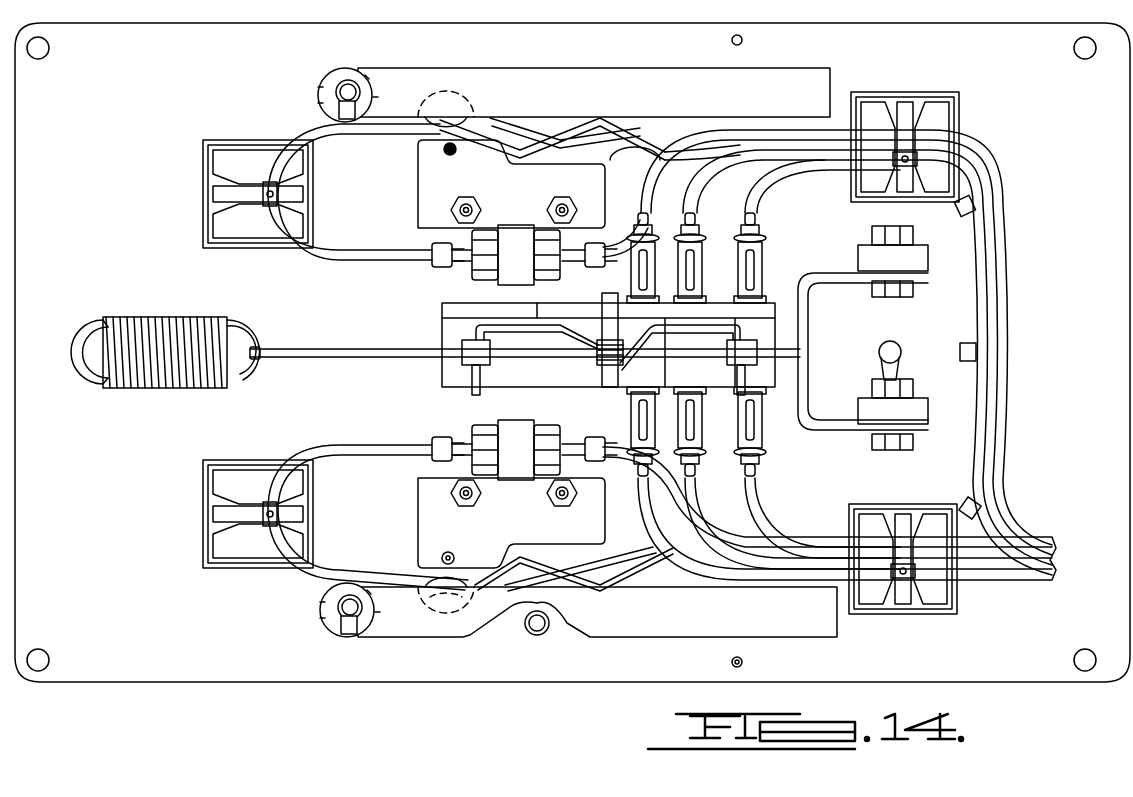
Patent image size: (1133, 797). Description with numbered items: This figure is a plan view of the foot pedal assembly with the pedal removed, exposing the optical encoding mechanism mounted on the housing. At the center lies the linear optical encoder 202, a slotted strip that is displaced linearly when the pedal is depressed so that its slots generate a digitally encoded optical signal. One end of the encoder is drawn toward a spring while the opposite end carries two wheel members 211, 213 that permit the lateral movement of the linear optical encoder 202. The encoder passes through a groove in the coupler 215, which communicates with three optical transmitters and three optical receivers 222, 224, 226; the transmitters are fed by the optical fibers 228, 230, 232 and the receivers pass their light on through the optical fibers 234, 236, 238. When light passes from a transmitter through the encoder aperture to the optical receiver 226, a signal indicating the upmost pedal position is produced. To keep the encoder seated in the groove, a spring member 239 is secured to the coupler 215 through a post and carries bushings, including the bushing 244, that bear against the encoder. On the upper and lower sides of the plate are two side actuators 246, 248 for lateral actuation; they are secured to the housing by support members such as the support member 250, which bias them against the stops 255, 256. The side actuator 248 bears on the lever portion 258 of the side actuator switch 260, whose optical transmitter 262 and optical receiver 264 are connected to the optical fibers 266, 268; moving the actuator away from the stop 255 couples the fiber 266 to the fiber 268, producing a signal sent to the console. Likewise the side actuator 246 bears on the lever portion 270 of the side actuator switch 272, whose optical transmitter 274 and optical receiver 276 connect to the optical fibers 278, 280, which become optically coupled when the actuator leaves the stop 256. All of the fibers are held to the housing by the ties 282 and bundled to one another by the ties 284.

The linear optical encoder 202 is at (285, 357).
The wheel member 211 is at (858, 404).
The wheel member 213 is at (860, 257).
The coupler 215 is at (442, 377).
The optical receiver 222 is at (765, 422).
The optical receiver 224 is at (700, 400).
The optical receiver 226 is at (658, 440).
The optical fiber 228 is at (836, 170).
The optical fiber 230 is at (745, 165).
The optical fiber 232 is at (645, 192).
The optical fiber 234 is at (760, 500).
The optical fiber 236 is at (730, 520).
The optical fiber 238 is at (640, 514).
The spring member 239 is at (462, 332).
The bushing 244 is at (790, 352).
The side actuator 246 is at (415, 625).
The side actuator 248 is at (398, 72).
The support member 250 is at (320, 610).
The stop 255 is at (735, 125).
The stop 256 is at (742, 583).
The lever portion 258 is at (575, 128).
The side actuator switch 260 is at (418, 182).
The optical transmitter 262 is at (458, 270).
The optical receiver 264 is at (545, 250).
The optical fiber 266 is at (330, 258).
The optical fiber 268 is at (680, 228).
The lever portion 270 is at (625, 580).
The side actuator switch 272 is at (418, 548).
The optical transmitter 274 is at (475, 440).
The optical receiver 276 is at (553, 440).
The optical fiber 278 is at (370, 460).
The optical fiber 280 is at (607, 435).
The tie 282 is at (203, 152).
The tie 284 is at (1003, 332).